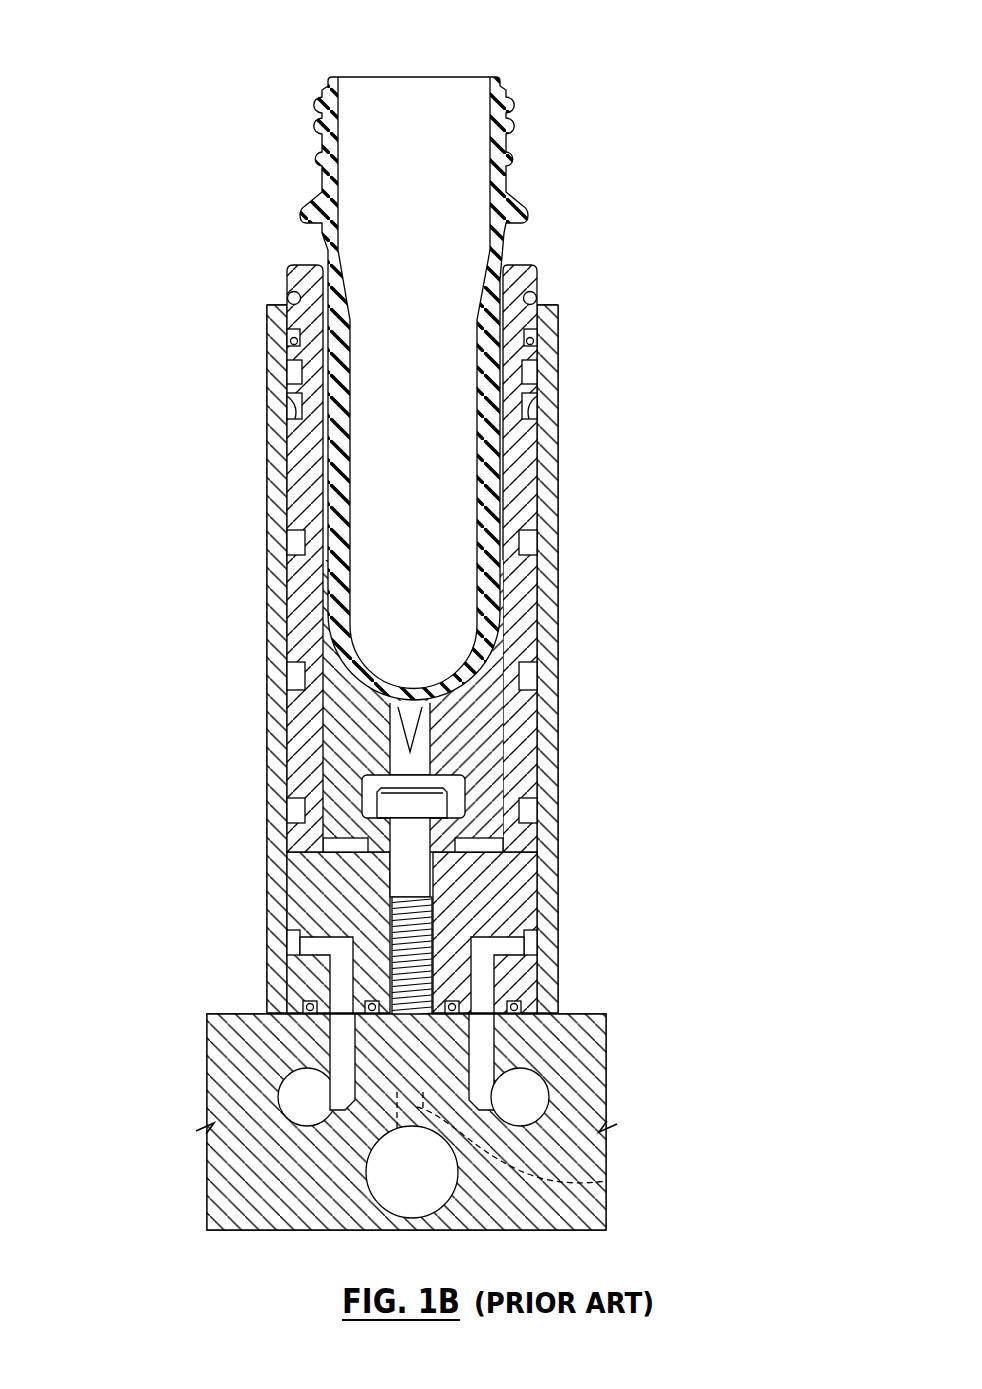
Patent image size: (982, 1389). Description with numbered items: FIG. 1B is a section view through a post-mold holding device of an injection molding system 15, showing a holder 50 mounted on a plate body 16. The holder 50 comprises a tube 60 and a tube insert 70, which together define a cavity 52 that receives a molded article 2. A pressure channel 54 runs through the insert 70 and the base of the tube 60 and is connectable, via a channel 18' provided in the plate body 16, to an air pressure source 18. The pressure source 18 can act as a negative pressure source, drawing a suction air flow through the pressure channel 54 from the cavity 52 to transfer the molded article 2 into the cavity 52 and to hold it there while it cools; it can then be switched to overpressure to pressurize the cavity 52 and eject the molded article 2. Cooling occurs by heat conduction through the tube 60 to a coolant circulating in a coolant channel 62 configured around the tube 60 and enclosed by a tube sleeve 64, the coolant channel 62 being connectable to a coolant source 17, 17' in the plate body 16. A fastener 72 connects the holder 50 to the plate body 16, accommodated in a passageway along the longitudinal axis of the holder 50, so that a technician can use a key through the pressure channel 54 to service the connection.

The molded article 2 is at (539, 67).
The bottle holding system 15 is at (132, 993).
The plate body 16 is at (587, 1032).
The coolant source 17 is at (520, 1097).
The coolant source 17' is at (574, 1062).
The air pressure source 18 is at (412, 1172).
The channel 18' is at (534, 1137).
The holder 50 is at (597, 274).
The cavity 52 is at (338, 493).
The pressure channel 54 is at (413, 762).
The tube 60 is at (527, 492).
The coolant channel 62 is at (527, 952).
The tube sleeve 64 is at (548, 435).
The tube insert 70 is at (485, 732).
The fastener 72 is at (422, 873).